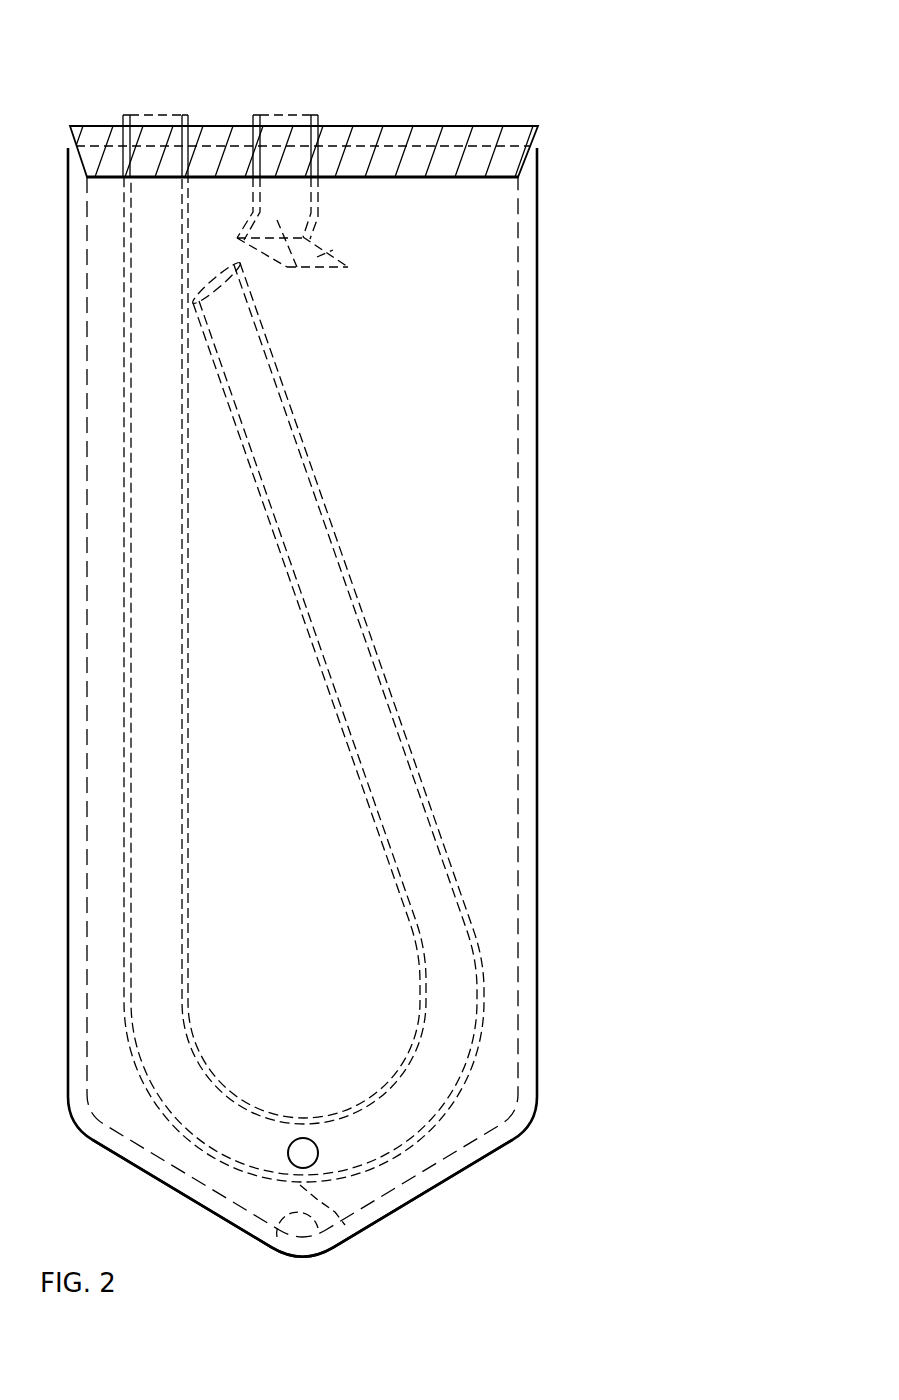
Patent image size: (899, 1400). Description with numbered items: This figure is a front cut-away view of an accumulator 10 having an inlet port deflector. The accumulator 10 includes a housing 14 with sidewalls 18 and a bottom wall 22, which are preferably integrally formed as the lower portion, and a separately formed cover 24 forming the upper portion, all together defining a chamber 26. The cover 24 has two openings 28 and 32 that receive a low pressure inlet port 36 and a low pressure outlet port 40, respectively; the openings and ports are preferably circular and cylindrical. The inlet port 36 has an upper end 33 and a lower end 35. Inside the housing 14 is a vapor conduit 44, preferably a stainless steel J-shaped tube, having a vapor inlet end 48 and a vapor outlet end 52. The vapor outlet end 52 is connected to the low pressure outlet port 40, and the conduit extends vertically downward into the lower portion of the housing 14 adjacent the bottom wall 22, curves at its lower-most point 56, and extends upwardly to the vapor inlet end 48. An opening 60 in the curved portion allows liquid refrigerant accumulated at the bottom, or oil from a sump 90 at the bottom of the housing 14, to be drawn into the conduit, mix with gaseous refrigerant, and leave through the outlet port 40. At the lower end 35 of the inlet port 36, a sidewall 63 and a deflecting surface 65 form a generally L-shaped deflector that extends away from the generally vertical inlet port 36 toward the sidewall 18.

The accumulator 10 is at (507, 42).
The housing 14 is at (560, 244).
The sidewalls 18 is at (540, 298).
The bottom wall 22 is at (430, 1190).
The cover 24 is at (412, 144).
The chamber 26 is at (450, 438).
The opening 28 is at (333, 140).
The opening 32 is at (200, 142).
The upper end 33 is at (327, 115).
The lower end 35 is at (336, 210).
The low pressure inlet port 36 is at (268, 105).
The low pressure outlet port 40 is at (170, 100).
The vapor conduit 44 is at (124, 679).
The vapor inlet end 48 is at (207, 280).
The vapor outlet end 52 is at (122, 117).
The lower-most point 56 is at (345, 1227).
The opening 60 is at (301, 1158).
The sidewall 63 is at (297, 265).
The deflecting surface 65 is at (323, 250).
The sump 90 is at (277, 1240).